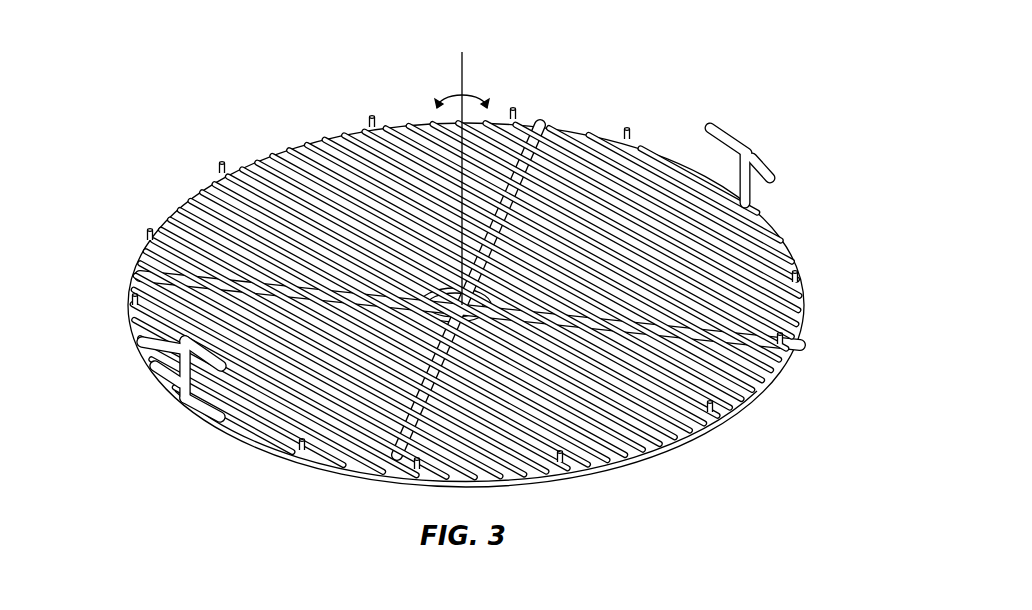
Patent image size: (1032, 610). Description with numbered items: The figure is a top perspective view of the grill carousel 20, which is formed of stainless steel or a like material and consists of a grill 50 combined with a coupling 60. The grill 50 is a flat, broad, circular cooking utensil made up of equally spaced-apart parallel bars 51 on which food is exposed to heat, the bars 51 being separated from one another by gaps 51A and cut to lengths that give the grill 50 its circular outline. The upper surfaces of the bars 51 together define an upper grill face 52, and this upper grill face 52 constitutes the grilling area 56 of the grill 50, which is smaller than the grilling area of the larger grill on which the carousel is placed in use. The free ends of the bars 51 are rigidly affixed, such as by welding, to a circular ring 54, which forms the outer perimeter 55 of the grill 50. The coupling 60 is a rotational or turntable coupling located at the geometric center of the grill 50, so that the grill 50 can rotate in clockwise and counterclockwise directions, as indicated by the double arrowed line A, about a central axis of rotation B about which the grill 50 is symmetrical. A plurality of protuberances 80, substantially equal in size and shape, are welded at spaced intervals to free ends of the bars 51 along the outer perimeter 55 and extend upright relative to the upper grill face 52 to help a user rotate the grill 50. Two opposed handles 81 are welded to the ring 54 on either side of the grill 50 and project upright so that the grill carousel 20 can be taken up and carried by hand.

The grill carousel 20 is at (463, 305).
The grill 50 is at (463, 305).
The bars 51 is at (317, 393).
The gaps 51A is at (343, 390).
The upper grill face 52 is at (390, 197).
The circular ring 54 is at (675, 455).
The outer perimeter 55 is at (770, 395).
The grilling area 56 is at (612, 280).
The coupling 60 is at (485, 313).
The protuberances 80 is at (220, 170).
The handles 81 is at (758, 160).
The double arrowed line A is at (465, 52).
The axis of rotation B is at (470, 149).